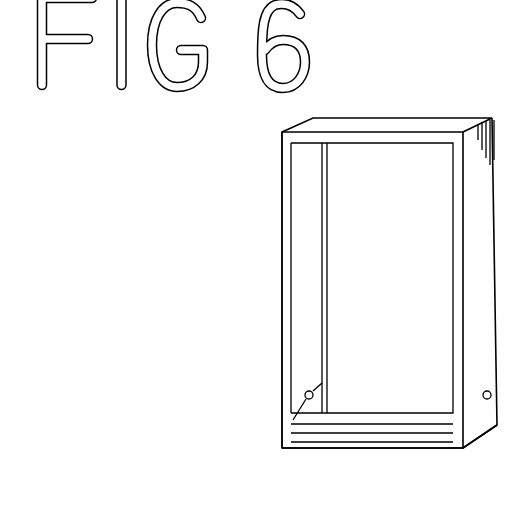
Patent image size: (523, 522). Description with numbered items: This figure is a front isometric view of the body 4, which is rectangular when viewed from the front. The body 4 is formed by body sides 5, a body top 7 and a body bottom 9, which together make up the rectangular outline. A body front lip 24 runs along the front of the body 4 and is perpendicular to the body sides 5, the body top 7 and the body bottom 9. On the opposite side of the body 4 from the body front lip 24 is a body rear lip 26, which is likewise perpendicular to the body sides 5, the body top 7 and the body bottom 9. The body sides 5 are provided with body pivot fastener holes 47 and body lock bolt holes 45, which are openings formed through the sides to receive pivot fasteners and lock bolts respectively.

The body 4 is at (168, 240).
The body top 7 is at (373, 122).
The body sides 5 is at (483, 182).
The body front lip 24 is at (283, 315).
The body rear lip 26 is at (326, 286).
The body lock bolt holes 45 is at (486, 392).
The body pivot fastener holes 47 is at (463, 401).
The body bottom 9 is at (318, 440).